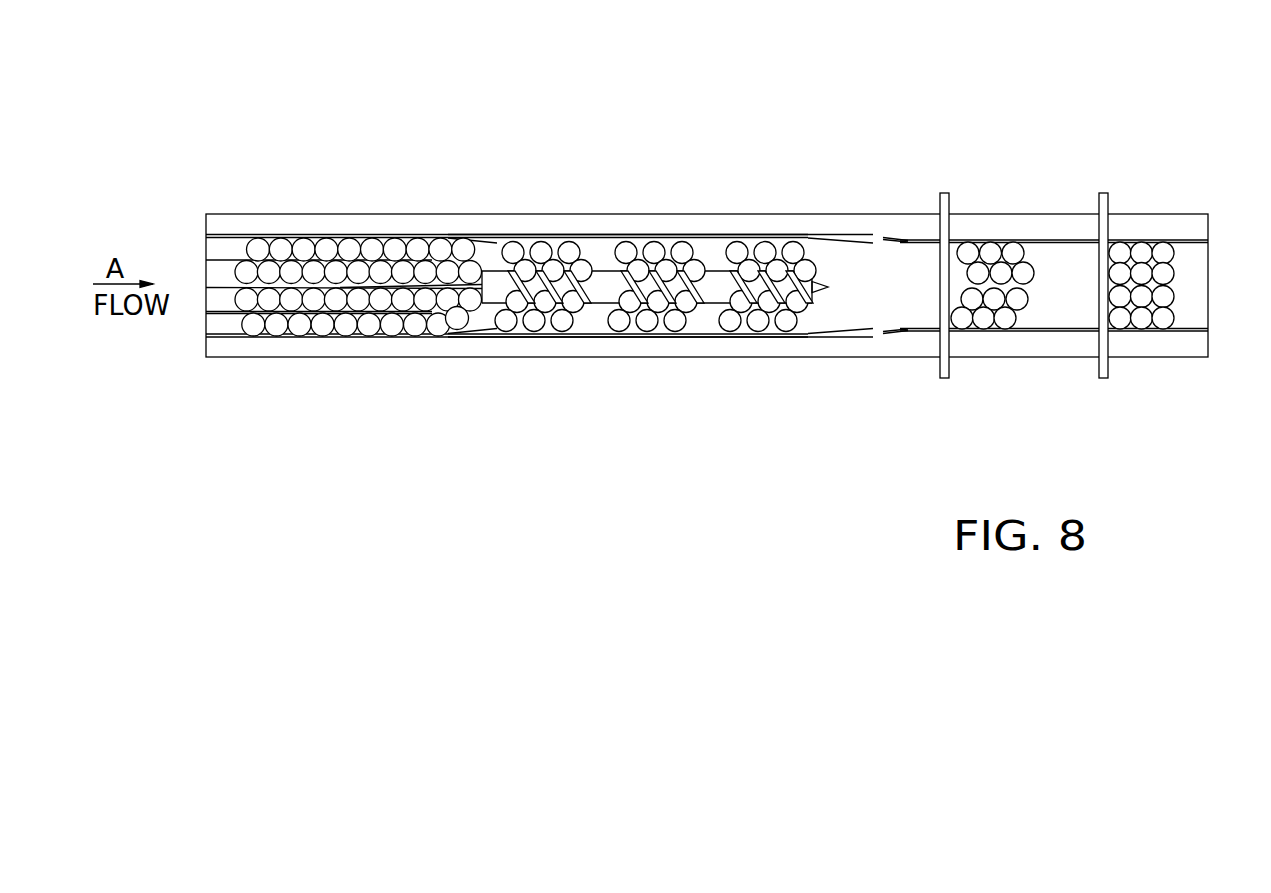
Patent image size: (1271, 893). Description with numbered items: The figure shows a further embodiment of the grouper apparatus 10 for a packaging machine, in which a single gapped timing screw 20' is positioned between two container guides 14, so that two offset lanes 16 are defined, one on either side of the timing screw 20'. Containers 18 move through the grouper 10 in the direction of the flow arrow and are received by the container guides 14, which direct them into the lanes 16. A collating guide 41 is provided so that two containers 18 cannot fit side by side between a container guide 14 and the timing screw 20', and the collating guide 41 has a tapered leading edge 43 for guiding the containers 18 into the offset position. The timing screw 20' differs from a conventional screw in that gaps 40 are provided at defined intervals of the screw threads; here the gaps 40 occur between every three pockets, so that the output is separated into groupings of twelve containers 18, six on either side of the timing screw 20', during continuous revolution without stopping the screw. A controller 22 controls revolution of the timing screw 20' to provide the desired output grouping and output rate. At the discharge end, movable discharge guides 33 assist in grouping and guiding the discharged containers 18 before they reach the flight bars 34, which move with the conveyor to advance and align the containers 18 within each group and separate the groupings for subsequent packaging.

The grouper apparatus 10 is at (652, 88).
The container guide 14 is at (598, 234).
The lanes 16 is at (405, 242).
The containers 18 is at (541, 252).
The timing screw 20' is at (660, 340).
The controller 22 is at (725, 337).
The movable discharge guides 33 is at (855, 240).
The flight bar 34 is at (945, 192).
The gaps 40 is at (718, 271).
The collating guide 41 is at (495, 234).
The tapered leading edge 43 is at (447, 234).